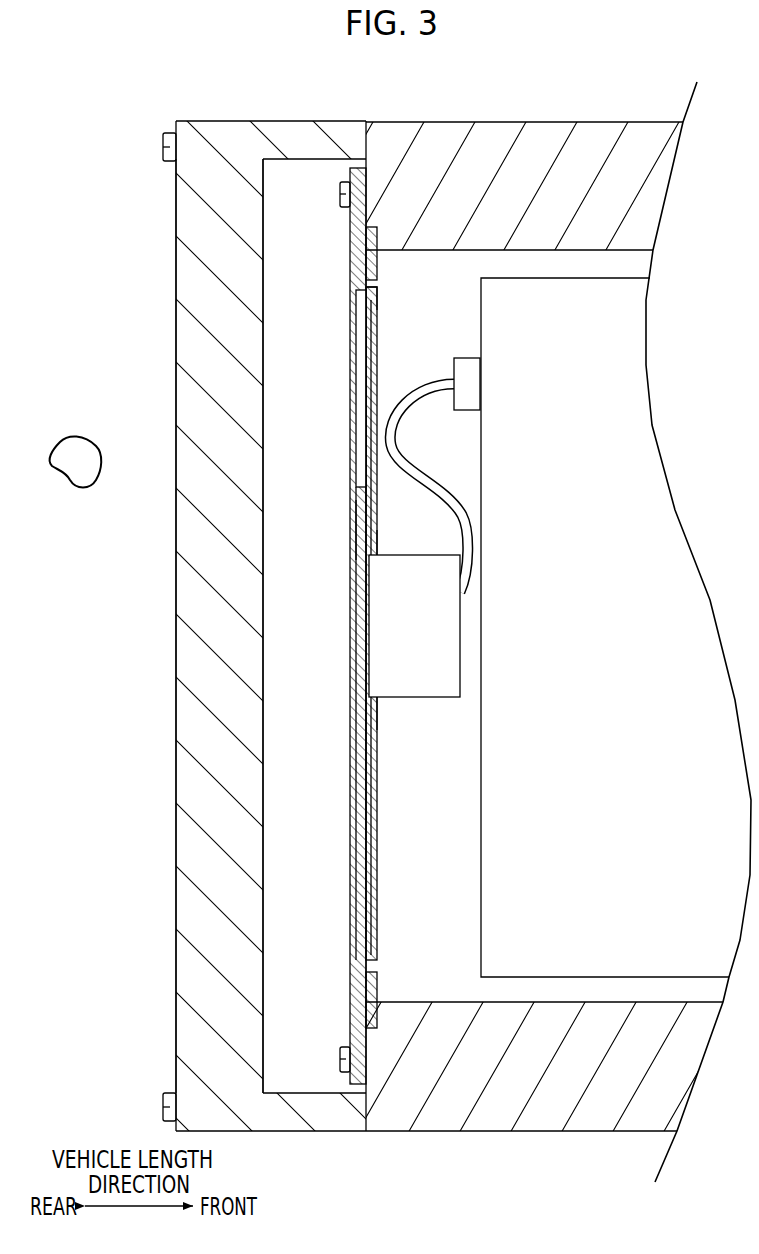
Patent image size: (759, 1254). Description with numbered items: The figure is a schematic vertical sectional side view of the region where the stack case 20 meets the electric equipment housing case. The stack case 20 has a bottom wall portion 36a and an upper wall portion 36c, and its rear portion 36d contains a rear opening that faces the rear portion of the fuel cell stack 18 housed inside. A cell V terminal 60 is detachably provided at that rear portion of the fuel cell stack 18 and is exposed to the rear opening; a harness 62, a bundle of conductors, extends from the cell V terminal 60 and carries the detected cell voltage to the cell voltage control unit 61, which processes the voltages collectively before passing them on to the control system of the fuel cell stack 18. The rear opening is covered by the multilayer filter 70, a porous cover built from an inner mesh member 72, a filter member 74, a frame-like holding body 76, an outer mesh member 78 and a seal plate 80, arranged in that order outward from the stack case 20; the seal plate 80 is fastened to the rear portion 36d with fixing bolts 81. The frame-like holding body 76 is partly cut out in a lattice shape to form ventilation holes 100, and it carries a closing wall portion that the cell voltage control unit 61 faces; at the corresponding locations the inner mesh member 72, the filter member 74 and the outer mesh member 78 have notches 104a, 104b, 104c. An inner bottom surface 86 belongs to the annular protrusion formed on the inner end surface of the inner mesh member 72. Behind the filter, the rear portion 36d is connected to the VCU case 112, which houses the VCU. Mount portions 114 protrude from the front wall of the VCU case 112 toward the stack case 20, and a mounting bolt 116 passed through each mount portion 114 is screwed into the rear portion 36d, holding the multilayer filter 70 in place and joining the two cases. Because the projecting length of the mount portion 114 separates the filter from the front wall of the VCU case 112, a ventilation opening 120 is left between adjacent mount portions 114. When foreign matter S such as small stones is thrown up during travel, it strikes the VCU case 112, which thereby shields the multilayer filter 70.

The mount portion 114 is at (297, 140).
The VCU case 112 is at (195, 645).
The ventilation opening 120 is at (295, 711).
The mounting bolt 116 is at (162, 148).
The rear portion 36d is at (358, 145).
The upper wall portion 36c is at (543, 133).
The bottom wall portion 36a is at (540, 1117).
The stack case 20 is at (465, 1133).
The fuel cell stack 18 is at (615, 368).
The multilayer filter 70 is at (370, 181).
The outer mesh member 78 is at (352, 332).
The fixing bolt 81 is at (340, 193).
The seal plate 80 is at (355, 247).
The filter member 74 is at (378, 329).
The inner mesh member 72 is at (380, 297).
The ventilation hole 100 is at (360, 366).
The inner bottom surface 86 is at (355, 652).
The notch 104c is at (352, 545).
The notch 104a is at (378, 545).
The notch 104b is at (378, 714).
The frame-like holding body 76 is at (378, 992).
The harness 62 is at (452, 503).
The cell V terminal 60 is at (470, 383).
The cell voltage control unit 61 is at (450, 626).
The foreign matter S is at (176, 466).